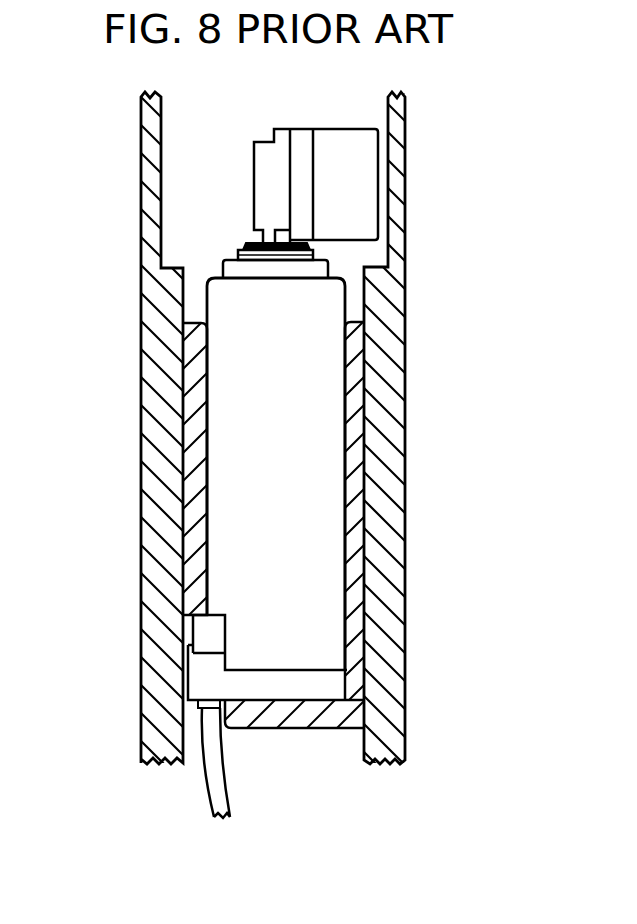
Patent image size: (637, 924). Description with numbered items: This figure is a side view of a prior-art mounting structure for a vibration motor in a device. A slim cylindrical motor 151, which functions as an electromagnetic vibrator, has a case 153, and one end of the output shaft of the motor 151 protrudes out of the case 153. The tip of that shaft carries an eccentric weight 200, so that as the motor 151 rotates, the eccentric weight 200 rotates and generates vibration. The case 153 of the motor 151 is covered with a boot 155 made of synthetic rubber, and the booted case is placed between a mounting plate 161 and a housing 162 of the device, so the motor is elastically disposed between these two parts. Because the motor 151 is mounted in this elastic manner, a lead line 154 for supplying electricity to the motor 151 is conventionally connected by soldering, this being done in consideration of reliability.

The slim cylindrical motor 151 is at (215, 257).
The case 153 is at (225, 305).
The lead line 154 is at (215, 783).
The boot 155 is at (347, 712).
The mounting plate 161 is at (170, 462).
The housing 162 is at (388, 483).
The eccentric weight 200 is at (360, 175).